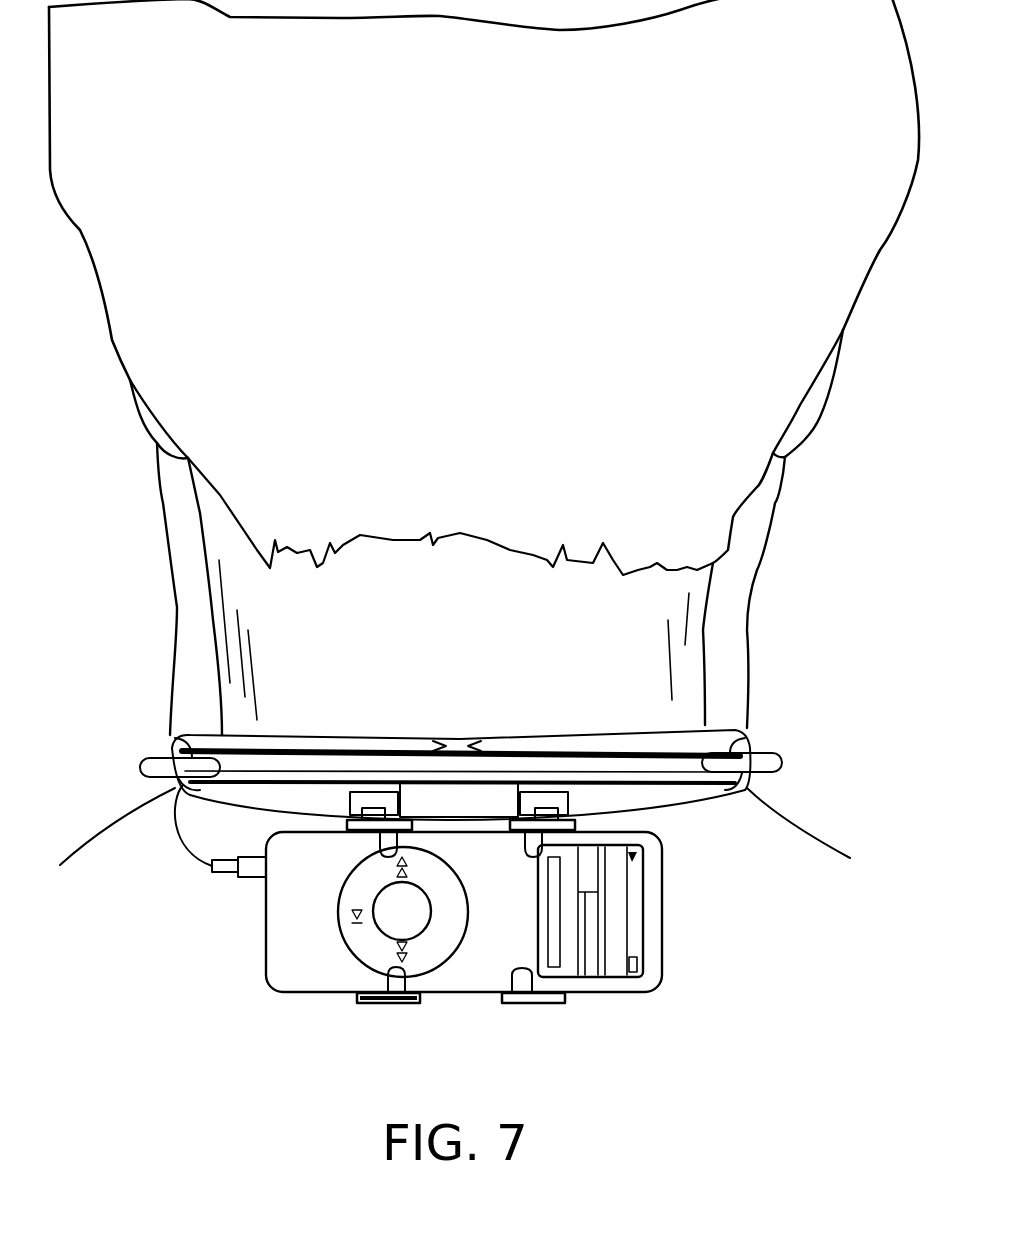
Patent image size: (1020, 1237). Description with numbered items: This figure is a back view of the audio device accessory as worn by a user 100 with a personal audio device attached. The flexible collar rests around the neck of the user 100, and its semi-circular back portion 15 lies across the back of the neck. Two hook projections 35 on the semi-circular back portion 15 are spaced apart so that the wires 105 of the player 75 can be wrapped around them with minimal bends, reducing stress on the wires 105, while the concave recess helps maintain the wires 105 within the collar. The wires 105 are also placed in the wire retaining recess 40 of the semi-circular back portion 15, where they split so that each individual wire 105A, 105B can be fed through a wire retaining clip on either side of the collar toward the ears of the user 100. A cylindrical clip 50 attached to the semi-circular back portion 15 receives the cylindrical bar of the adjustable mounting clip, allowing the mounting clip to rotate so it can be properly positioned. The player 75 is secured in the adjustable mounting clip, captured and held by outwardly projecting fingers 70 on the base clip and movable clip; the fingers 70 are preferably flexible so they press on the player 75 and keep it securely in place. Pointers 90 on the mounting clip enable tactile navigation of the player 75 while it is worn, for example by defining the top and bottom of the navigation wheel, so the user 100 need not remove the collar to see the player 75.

The user 100 is at (463, 867).
The semi-circular back portion 15 is at (588, 733).
The hook projections 35 is at (150, 760).
The wire retaining recess 40 is at (462, 740).
The cylindrical clip 50 is at (473, 815).
The fingers 70 is at (377, 1004).
The player 75 is at (455, 1004).
The pointers 90 is at (387, 982).
The wires 105 is at (313, 750).
The individual wire 105A is at (752, 592).
The individual wire 105B is at (175, 607).